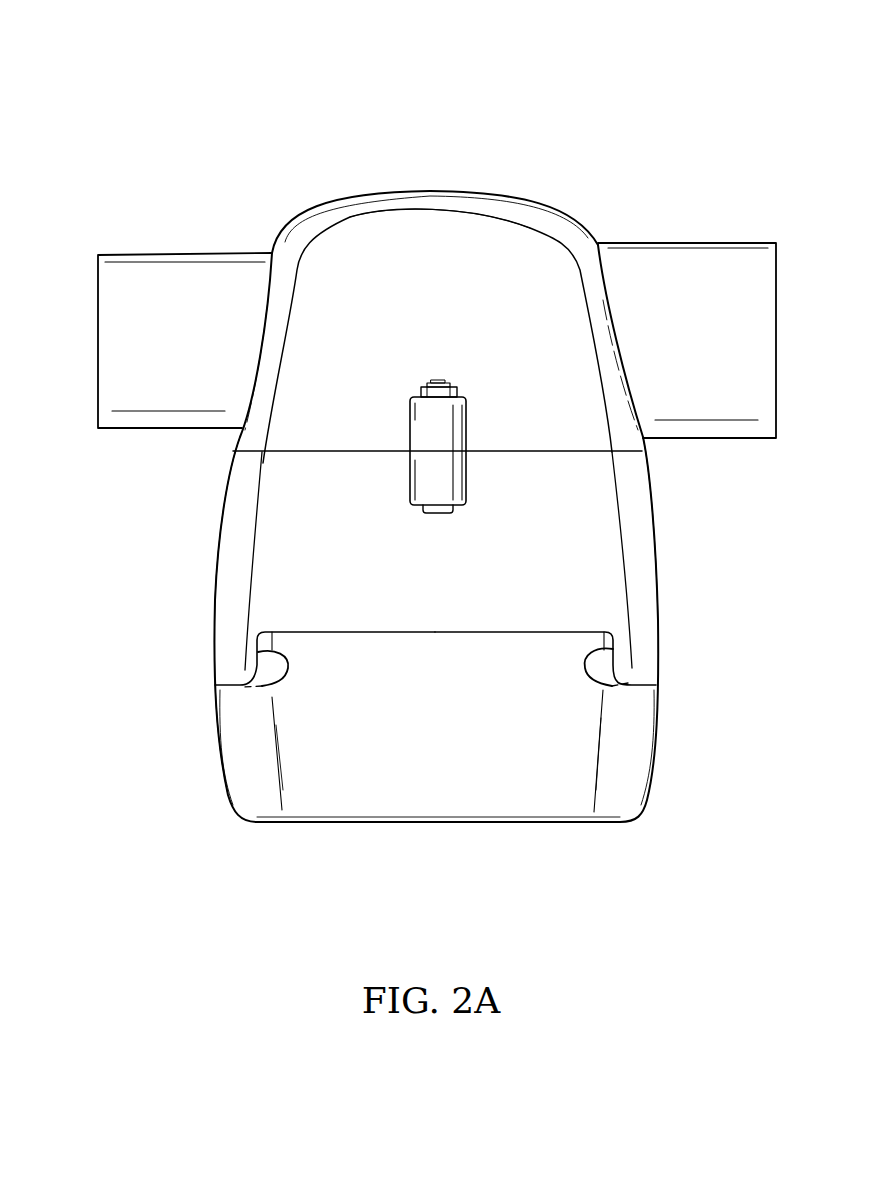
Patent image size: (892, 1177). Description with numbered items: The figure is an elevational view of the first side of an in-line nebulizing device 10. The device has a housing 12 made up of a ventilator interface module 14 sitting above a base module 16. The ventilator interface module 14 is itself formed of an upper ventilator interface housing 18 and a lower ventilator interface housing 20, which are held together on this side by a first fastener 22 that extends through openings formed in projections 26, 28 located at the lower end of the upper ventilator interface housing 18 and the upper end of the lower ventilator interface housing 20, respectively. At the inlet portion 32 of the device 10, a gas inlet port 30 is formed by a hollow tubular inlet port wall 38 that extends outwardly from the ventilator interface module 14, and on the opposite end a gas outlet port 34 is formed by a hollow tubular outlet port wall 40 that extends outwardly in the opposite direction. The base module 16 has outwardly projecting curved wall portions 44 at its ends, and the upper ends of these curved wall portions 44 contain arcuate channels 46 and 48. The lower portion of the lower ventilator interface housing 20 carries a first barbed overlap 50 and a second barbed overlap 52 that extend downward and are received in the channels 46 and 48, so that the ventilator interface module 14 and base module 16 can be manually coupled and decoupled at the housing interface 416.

The in-line nebulizing device 10 is at (220, 84).
The housing 12 is at (553, 148).
The ventilator interface module 14 is at (142, 464).
The base module 16 is at (240, 821).
The upper ventilator interface housing 18 is at (582, 230).
The lower ventilator interface housing 20 is at (656, 538).
The first fastener 22 is at (437, 380).
The projection 26 is at (458, 425).
The projection 28 is at (420, 472).
The gas inlet port 30 is at (72, 294).
The inlet portion 32 is at (90, 575).
The gas outlet port 34 is at (786, 288).
The tubular inlet port wall 38 is at (147, 272).
The tubular outlet port wall 40 is at (687, 260).
The curved wall portion 44 is at (219, 760).
The arcuate channel 46 is at (598, 670).
The arcuate channel 48 is at (277, 667).
The first barbed overlap 50 is at (648, 657).
The second barbed overlap 52 is at (213, 663).
The housing interface 416 is at (142, 688).